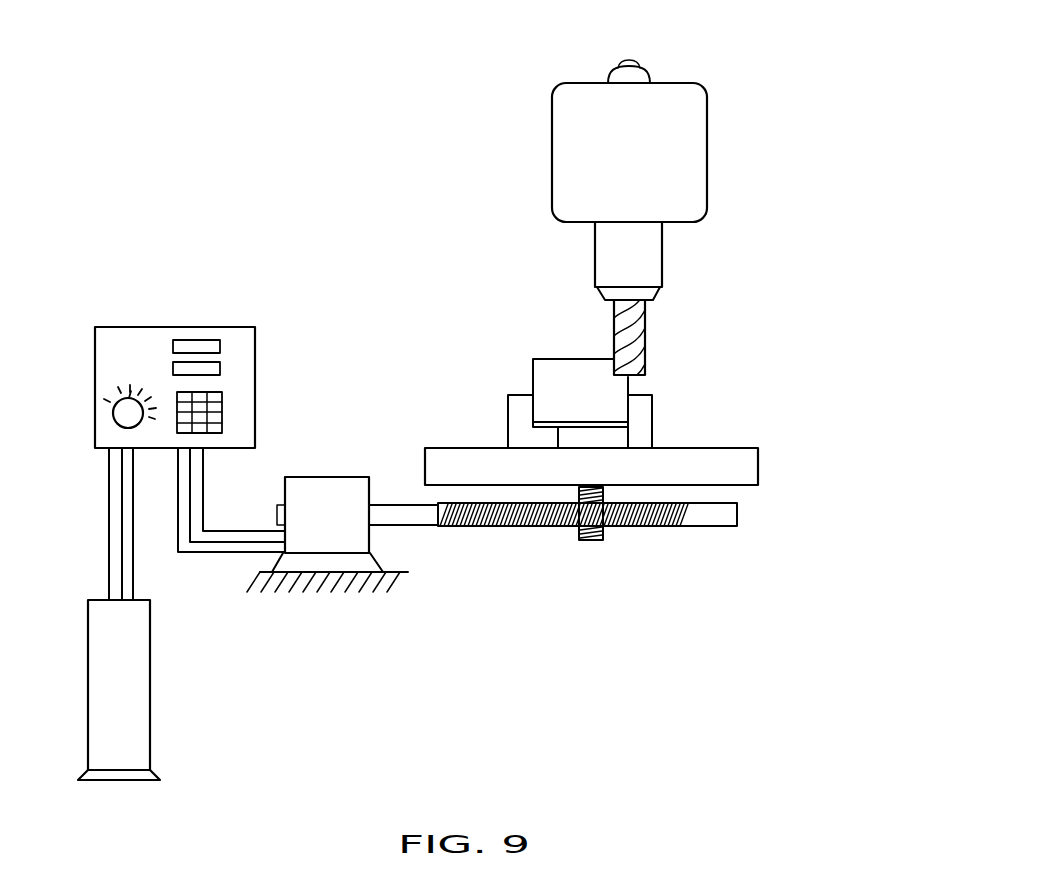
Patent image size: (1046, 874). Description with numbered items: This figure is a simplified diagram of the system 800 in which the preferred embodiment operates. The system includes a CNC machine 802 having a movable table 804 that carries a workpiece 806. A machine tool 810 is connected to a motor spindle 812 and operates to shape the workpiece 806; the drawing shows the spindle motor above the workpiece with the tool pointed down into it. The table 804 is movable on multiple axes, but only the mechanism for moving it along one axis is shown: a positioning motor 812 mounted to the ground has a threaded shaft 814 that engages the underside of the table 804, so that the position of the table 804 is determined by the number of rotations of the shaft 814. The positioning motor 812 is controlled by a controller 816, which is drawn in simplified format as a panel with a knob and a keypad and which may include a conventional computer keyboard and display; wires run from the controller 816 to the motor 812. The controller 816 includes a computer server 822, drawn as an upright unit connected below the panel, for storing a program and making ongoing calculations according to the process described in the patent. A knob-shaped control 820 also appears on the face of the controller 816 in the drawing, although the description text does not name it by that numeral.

The system 800 is at (294, 105).
The CNC machine 802 is at (803, 195).
The movable table 804 is at (723, 448).
The workpiece 806 is at (553, 358).
The machine tool 810 is at (646, 332).
The motor spindle / positioning motor 812 is at (552, 132).
The threaded shaft 814 is at (705, 526).
The controller 816 is at (142, 327).
The control knob 820 is at (117, 405).
The computer server 822 is at (150, 687).